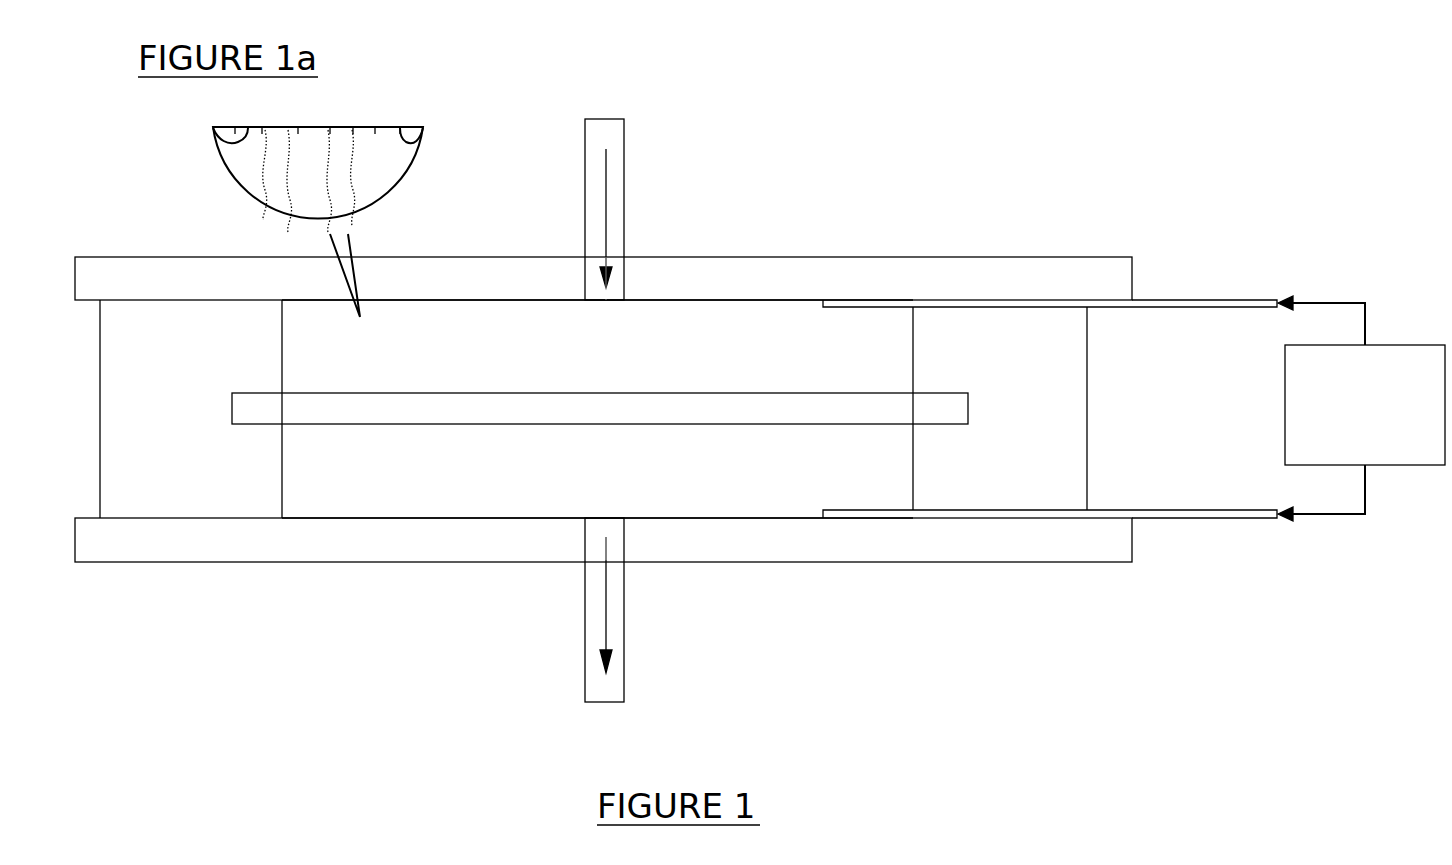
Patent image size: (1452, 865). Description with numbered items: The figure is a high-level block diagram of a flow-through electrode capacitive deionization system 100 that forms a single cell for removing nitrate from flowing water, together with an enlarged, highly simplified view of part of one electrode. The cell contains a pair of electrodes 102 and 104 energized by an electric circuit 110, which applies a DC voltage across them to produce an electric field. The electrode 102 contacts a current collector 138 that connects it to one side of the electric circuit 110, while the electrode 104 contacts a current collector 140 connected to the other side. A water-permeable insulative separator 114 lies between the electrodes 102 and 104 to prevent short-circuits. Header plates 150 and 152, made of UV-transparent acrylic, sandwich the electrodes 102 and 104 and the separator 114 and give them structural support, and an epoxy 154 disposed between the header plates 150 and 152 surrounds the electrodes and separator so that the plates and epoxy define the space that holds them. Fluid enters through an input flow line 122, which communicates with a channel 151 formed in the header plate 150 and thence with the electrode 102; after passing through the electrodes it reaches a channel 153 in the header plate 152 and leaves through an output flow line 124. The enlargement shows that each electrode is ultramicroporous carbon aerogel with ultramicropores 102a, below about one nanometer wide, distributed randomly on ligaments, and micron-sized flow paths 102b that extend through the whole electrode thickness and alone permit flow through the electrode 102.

In FIG. 1, the flow-through electrode capacitive deionization (FTE-CDI) system 100 is at (1097, 120).
In FIG. 1, the electrode 102 is at (559, 361).
In FIG. 1A, the ultramicropores 102a is at (423, 127).
In FIG. 1A, the micron-sized flow paths 102b is at (275, 190).
In FIG. 1, the electrode 104 is at (563, 484).
In FIG. 1, the electric circuit 110 is at (1345, 444).
In FIG. 1, the separator 114 is at (561, 422).
In FIG. 1, the input flow line 122 is at (620, 180).
In FIG. 1, the output flow line 124 is at (625, 647).
In FIG. 1, the current collector 138 is at (1185, 298).
In FIG. 1, the current collector 140 is at (1202, 517).
In FIG. 1, the header plate 150 is at (131, 292).
In FIG. 1, the channel 151 is at (618, 280).
In FIG. 1, the header plate 152 is at (129, 554).
In FIG. 1, the channel 153 is at (615, 540).
In FIG. 1, the epoxy 154 is at (179, 362).